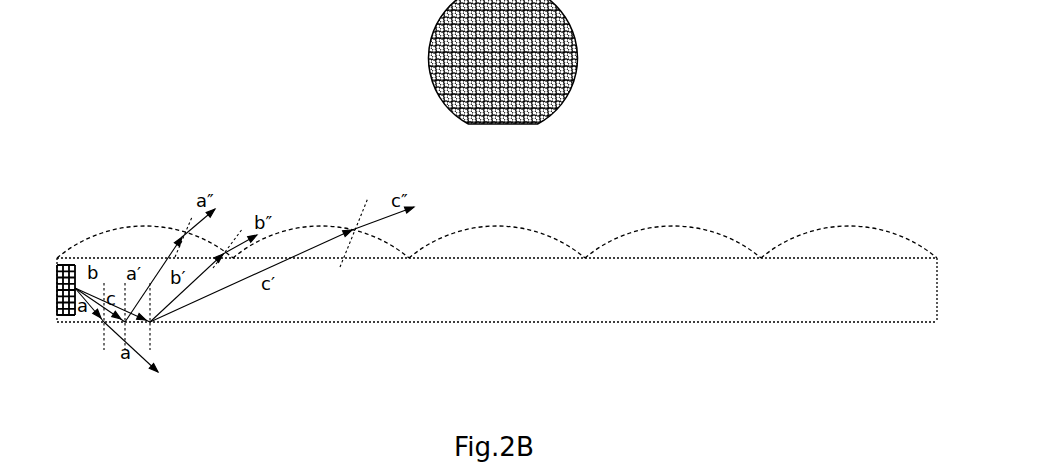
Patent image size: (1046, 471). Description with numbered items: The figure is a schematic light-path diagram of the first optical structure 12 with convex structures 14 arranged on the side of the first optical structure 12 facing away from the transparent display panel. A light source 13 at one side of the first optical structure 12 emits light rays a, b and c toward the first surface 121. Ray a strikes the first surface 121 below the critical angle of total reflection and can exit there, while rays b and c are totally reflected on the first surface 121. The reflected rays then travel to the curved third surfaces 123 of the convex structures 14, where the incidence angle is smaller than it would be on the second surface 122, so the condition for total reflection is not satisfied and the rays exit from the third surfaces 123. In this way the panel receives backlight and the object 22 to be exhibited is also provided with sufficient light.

The first optical structure 12 is at (497, 327).
The first surface 121 is at (810, 322).
The second surface 122 is at (803, 257).
The third surface 123 is at (515, 225).
The light source 13 is at (74, 320).
The convex structure 14 is at (698, 224).
The object to be exhibited 22 is at (575, 43).